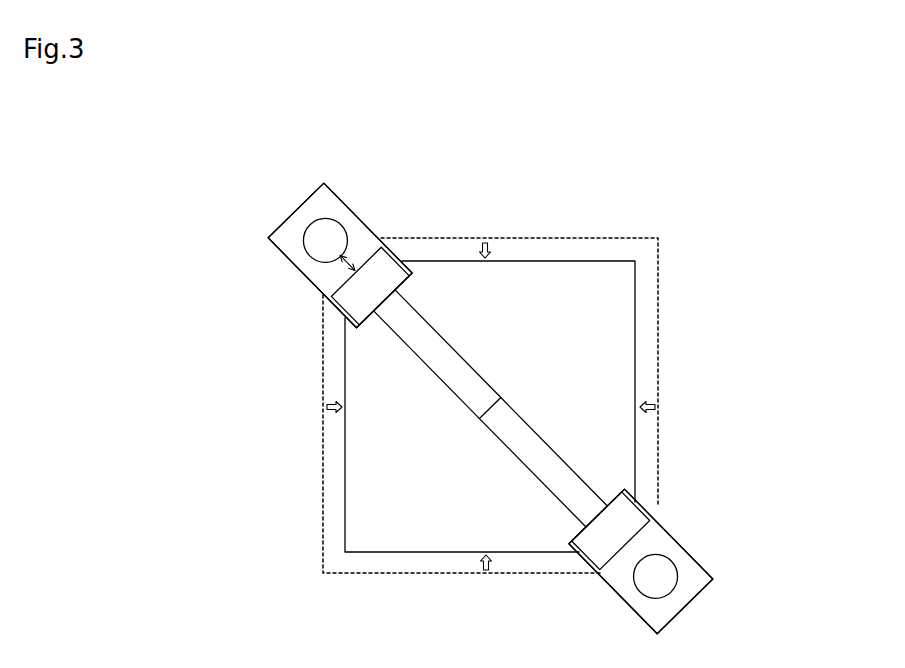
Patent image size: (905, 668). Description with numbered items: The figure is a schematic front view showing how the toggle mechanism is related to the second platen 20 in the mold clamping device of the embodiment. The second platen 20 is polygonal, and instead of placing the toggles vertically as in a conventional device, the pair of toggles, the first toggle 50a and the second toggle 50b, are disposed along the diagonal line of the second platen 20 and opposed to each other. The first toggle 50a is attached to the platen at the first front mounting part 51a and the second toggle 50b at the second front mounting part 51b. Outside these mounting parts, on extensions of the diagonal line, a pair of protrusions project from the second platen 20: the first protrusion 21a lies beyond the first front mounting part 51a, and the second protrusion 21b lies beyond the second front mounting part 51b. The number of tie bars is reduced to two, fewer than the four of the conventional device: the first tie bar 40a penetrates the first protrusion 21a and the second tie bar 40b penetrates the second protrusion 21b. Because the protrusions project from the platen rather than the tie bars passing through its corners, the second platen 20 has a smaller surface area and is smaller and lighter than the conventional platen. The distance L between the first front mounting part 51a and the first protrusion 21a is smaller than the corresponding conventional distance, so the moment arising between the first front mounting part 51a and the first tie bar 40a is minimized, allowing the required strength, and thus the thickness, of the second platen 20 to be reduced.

The second platen 20 is at (568, 260).
The first protrusion 21a is at (315, 272).
The second protrusion 21b is at (613, 565).
The first tie bar 40a is at (314, 240).
The second tie bar 40b is at (650, 582).
The first toggle 50a is at (422, 312).
The second toggle 50b is at (517, 407).
The first front mounting part 51a is at (375, 263).
The second front mounting part 51b is at (628, 512).
The distance L is at (353, 257).